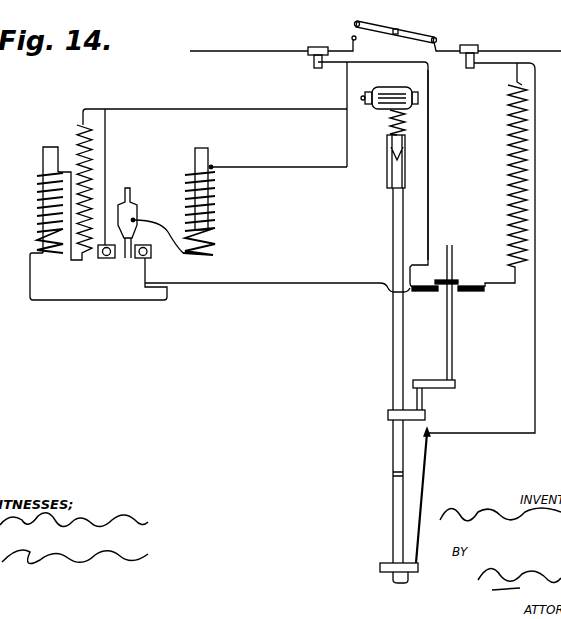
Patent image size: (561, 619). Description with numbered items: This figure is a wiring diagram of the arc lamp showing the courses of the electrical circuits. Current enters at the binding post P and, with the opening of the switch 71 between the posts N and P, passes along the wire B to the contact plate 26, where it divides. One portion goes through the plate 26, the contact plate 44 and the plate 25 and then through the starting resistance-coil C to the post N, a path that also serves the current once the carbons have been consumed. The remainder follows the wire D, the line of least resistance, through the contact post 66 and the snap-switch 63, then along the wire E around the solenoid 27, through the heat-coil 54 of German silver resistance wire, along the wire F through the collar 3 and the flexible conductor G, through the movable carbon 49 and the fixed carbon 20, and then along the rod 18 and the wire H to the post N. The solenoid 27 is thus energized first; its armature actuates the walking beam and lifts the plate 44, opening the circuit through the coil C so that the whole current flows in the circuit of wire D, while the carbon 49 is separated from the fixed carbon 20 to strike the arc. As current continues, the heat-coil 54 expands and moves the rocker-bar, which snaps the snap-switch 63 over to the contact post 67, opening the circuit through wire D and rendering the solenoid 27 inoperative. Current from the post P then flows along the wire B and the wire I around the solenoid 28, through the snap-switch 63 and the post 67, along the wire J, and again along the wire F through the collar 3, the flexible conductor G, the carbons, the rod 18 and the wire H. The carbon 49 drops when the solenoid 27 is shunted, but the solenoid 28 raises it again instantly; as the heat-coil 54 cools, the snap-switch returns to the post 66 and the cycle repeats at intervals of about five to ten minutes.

The collar 3 is at (413, 90).
The rod 18 is at (423, 486).
The fixed carbon 20 is at (396, 502).
The contact plate 25 is at (472, 296).
The contact plate 26 is at (425, 296).
The solenoid 27 is at (35, 200).
The solenoid 28 is at (210, 201).
The contact plate 44 is at (456, 283).
The movable carbon 49 is at (392, 222).
The heat-coil 54 is at (77, 143).
The snap-switch 63 is at (139, 213).
The contact post 66 is at (139, 263).
The contact post 67 is at (105, 260).
The switch 71 is at (416, 28).
The wire B is at (434, 165).
The resistance-coil C is at (508, 160).
The wire D is at (277, 279).
The wire E is at (98, 277).
The wire F is at (215, 109).
The flexible conductor G is at (392, 113).
The wire H is at (489, 249).
The wire I is at (278, 159).
The wire J is at (110, 177).
The binding post N is at (469, 48).
The binding post P is at (318, 48).